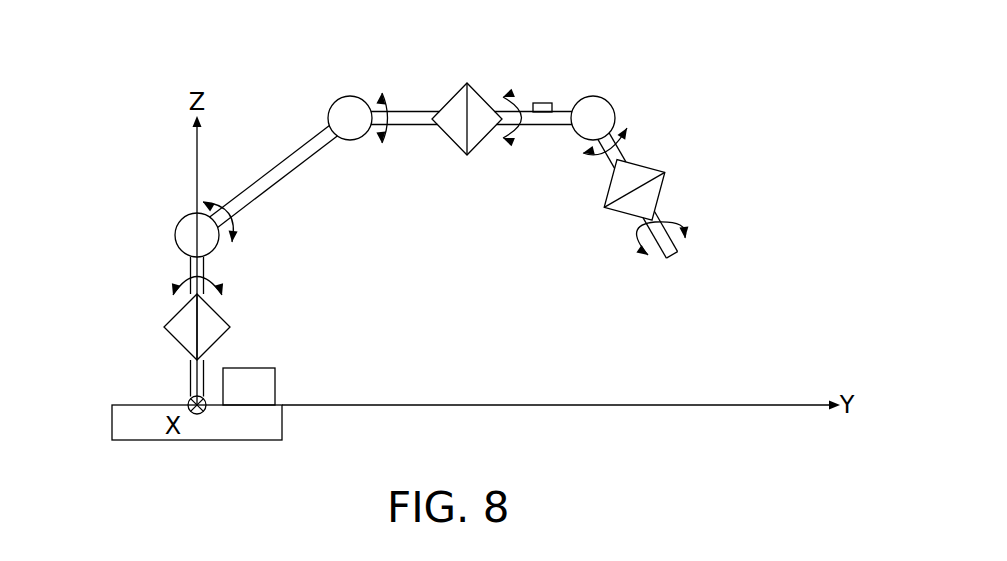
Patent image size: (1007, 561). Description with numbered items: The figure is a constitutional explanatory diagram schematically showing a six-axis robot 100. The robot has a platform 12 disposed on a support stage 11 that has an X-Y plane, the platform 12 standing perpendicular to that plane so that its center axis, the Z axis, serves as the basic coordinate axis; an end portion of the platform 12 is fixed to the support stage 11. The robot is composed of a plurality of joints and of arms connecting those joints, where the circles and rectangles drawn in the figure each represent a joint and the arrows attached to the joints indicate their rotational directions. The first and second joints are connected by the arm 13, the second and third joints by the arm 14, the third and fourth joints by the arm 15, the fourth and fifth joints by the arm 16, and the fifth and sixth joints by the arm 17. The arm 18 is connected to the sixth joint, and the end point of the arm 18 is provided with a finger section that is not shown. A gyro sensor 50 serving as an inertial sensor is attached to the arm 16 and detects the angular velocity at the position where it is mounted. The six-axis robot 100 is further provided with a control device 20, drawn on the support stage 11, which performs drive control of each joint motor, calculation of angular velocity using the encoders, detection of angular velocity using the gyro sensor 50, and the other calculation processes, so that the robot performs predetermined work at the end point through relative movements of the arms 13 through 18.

The six-axis robot 100 is at (118, 59).
The support stage 11 is at (283, 424).
The platform 12 is at (161, 310).
The arm 13 is at (205, 260).
The arm 14 is at (291, 191).
The arm 15 is at (407, 126).
The arm 16 is at (540, 126).
The arm 17 is at (622, 152).
The arm 18 is at (638, 232).
The control device 20 is at (276, 380).
The gyro sensor 50 is at (543, 103).